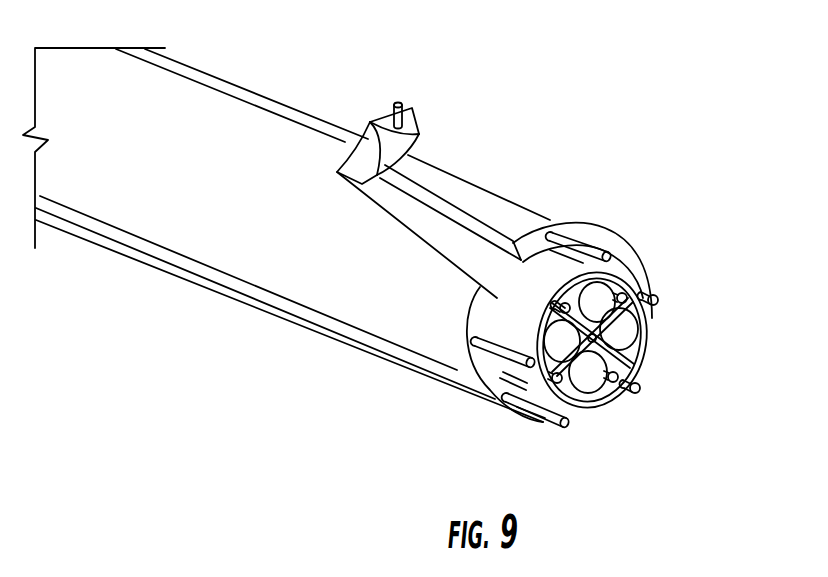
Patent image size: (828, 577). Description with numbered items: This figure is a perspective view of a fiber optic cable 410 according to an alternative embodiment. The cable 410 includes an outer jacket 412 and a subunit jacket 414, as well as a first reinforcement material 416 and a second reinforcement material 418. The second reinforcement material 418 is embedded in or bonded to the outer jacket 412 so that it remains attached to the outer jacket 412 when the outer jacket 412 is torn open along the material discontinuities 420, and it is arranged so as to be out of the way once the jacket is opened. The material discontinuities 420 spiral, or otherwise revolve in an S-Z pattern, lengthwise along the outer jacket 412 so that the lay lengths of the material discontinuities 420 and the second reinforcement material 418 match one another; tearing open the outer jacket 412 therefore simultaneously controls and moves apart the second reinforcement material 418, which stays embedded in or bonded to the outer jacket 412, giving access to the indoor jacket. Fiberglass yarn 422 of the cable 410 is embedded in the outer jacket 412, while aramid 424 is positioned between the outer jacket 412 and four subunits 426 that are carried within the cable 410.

The cable 410 is at (238, 398).
The outer jacket 412 is at (162, 223).
The subunit jacket 414 is at (597, 267).
The first reinforcement material 416 is at (613, 377).
The second reinforcement material 418 is at (620, 270).
The material discontinuities 420 is at (448, 211).
The fiberglass yarn 422 is at (400, 100).
The aramid 424 is at (542, 301).
The subunits 426 is at (620, 303).